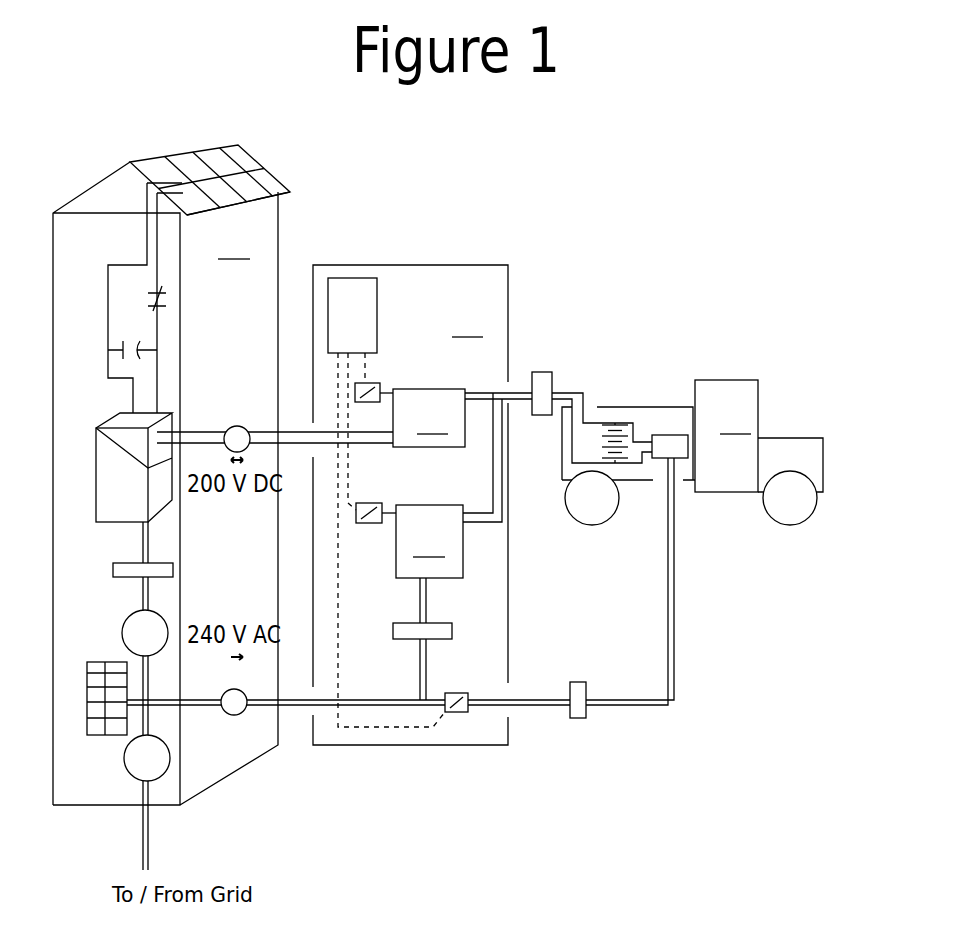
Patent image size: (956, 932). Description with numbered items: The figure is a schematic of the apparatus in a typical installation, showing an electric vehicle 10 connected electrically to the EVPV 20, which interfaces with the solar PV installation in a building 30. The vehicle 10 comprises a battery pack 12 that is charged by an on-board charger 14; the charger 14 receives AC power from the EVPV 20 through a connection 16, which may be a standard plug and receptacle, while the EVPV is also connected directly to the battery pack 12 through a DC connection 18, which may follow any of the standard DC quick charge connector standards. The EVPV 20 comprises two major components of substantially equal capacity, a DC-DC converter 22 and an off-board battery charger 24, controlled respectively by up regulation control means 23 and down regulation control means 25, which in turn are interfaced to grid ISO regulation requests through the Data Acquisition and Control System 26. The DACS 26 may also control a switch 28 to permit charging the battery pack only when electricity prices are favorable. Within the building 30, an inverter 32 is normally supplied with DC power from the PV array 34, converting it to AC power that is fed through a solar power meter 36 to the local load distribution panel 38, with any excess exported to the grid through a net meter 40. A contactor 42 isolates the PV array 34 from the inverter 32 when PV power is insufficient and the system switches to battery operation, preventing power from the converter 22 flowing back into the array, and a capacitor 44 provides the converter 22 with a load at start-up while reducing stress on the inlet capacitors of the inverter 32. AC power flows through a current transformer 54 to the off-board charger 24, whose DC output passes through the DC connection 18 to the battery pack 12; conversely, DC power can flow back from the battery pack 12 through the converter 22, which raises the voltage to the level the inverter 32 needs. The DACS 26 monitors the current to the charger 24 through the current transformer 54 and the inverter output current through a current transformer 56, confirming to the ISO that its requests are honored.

The electric vehicle 10 is at (692, 452).
The battery pack 12 is at (608, 425).
The on-board charger 14 is at (663, 435).
The connection 16 is at (586, 713).
The DC connection 18 is at (547, 372).
The EVPV 20 is at (410, 505).
The DC-DC converter 22 is at (429, 418).
The up regulation control means 23 is at (376, 382).
The off-board battery charger 24 is at (429, 541).
The down regulation control means 25 is at (384, 503).
The Data Acquisition and Control System 26 is at (350, 278).
The switch 28 is at (455, 712).
The building 30 is at (171, 483).
The inverter 32 is at (165, 415).
The PV array 34 is at (258, 168).
The solar power meter 36 is at (128, 613).
The local load distribution panel 38 is at (88, 661).
The net meter 40 is at (124, 758).
The contactor 42 is at (160, 291).
The capacitor 44 is at (150, 343).
The current transformer 54 is at (393, 625).
The current transformer 56 is at (126, 562).